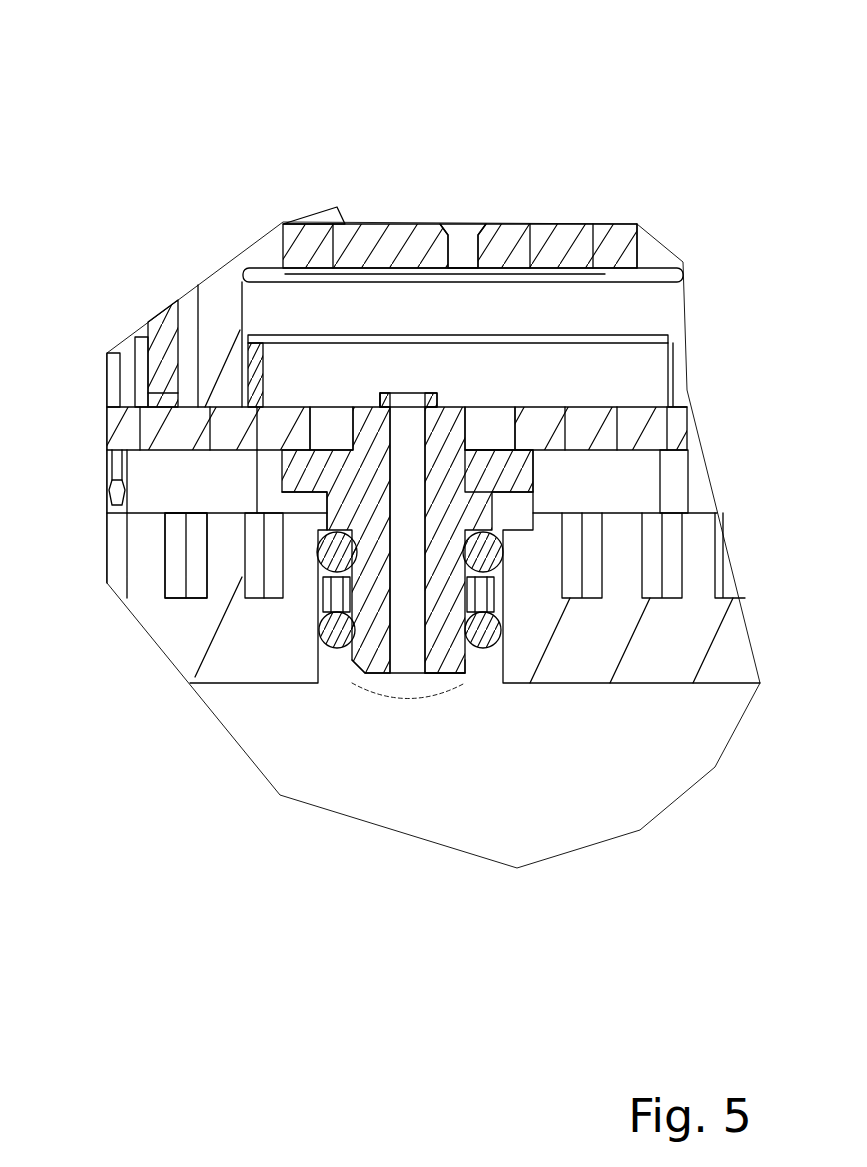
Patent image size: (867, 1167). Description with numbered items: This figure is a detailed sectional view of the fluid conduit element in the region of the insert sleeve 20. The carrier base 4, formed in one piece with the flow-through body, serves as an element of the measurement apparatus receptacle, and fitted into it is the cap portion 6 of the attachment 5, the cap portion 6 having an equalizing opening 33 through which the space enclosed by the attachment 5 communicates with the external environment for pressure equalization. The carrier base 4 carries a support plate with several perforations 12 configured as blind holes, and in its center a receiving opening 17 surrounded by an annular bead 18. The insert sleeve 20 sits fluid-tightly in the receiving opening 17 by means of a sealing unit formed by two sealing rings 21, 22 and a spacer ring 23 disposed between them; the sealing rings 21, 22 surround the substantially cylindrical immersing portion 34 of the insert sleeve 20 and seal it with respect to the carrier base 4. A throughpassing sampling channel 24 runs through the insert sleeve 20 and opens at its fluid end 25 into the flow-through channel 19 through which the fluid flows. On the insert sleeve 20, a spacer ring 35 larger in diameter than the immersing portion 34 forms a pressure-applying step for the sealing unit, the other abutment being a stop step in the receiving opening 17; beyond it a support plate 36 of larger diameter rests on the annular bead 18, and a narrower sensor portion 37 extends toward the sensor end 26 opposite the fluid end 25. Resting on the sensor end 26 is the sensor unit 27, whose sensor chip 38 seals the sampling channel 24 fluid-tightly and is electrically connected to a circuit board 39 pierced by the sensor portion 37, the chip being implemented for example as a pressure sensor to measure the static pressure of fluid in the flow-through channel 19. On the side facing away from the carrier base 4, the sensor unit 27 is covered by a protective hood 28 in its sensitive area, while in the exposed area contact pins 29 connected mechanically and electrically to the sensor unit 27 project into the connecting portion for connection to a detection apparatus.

The carrier base 4 is at (192, 645).
The attachment 5 is at (399, 210).
The cap portion 6 is at (612, 245).
The perforations 12 is at (197, 550).
The receiving opening 17 is at (422, 707).
The annular bead 18 is at (513, 502).
The flow-through channel 19 is at (446, 790).
The insert sleeve 20 is at (433, 475).
The sealing ring 21 is at (328, 648).
The sealing ring 22 is at (320, 555).
The spacer ring 23 is at (328, 592).
The sampling channel 24 is at (411, 620).
The fluid end 25 is at (436, 679).
The sensor end 26 is at (357, 394).
The sensor unit 27 is at (478, 398).
The protective hood 28 is at (541, 425).
The contact pins 29 is at (130, 367).
The equalizing opening 33 is at (463, 251).
The immersing portion 34 is at (443, 640).
The spacer ring 35 is at (327, 508).
The support plate 36 is at (297, 473).
The sensor portion 37 is at (365, 427).
The sensor chip 38 is at (402, 390).
The circuit board 39 is at (545, 420).